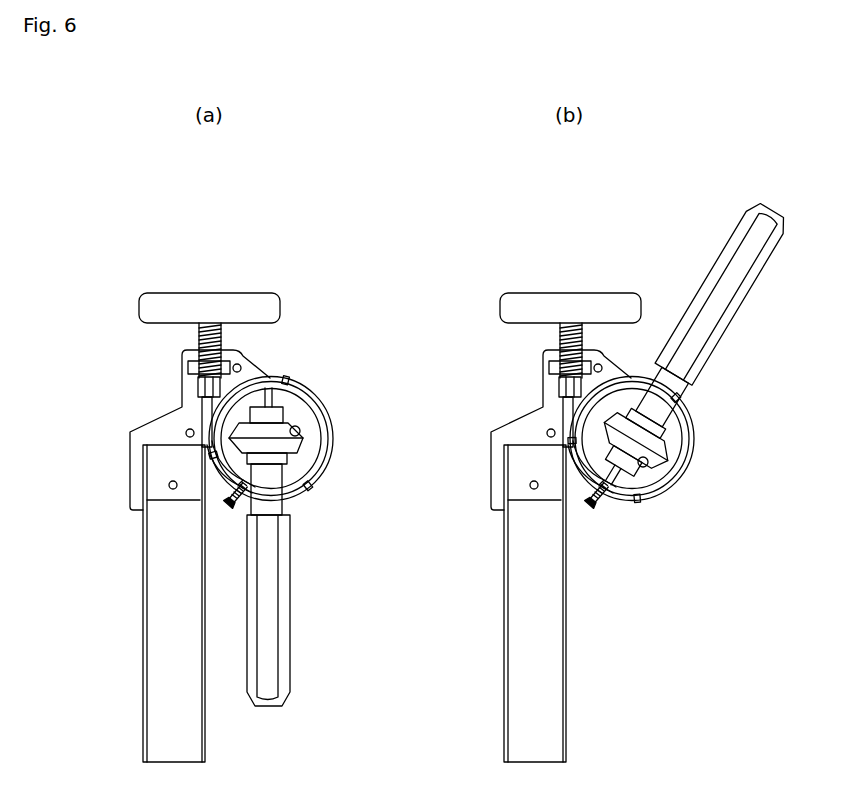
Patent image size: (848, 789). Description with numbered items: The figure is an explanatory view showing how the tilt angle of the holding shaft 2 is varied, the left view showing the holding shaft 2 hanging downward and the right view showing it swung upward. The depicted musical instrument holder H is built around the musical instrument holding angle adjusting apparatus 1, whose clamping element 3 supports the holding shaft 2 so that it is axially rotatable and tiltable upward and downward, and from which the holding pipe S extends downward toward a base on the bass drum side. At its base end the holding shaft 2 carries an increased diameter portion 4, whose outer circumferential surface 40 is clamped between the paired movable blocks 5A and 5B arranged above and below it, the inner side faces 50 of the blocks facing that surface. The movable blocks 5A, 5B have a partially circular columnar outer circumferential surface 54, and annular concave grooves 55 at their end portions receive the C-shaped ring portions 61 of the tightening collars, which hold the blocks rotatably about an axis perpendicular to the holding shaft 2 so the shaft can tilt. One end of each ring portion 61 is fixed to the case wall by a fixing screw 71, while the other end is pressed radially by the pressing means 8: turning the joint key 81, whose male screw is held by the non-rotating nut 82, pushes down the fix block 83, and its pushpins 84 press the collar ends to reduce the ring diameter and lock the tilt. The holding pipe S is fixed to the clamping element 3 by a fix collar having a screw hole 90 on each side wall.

In FIG. 6A, the musical instrument holding angle adjusting apparatus 1 is at (348, 267).
In FIG. 6B, the musical instrument holding angle adjusting apparatus 1 is at (675, 242).
In FIG. 6A, the holding shaft 2 is at (287, 605).
In FIG. 6B, the holding shaft 2 is at (733, 303).
In FIG. 6A, the clamping element 3 is at (153, 411).
In FIG. 6B, the clamping element 3 is at (514, 411).
In FIG. 6A, the increased diameter portion 4 is at (305, 437).
In FIG. 6B, the increased diameter portion 4 is at (662, 450).
In FIG. 6A, the movable block 5A is at (308, 470).
In FIG. 6B, the movable block 5A is at (622, 397).
In FIG. 6A, the movable block 5B is at (235, 470).
In FIG. 6B, the movable block 5B is at (694, 436).
In FIG. 6A, the pressing means 8 is at (168, 287).
In FIG. 6B, the pressing means 8 is at (529, 287).
In FIG. 6A, the outer circumferential surface 40 is at (303, 450).
In FIG. 6B, the outer circumferential surface 40 is at (640, 468).
In FIG. 6A, the inner side face 50 is at (293, 427).
In FIG. 6B, the inner side face 50 is at (637, 473).
In FIG. 6A, the outer circumferential surface 54 is at (215, 468).
In FIG. 6B, the outer circumferential surface 54 is at (592, 467).
In FIG. 6A, the annular concave groove 55 is at (308, 485).
In FIG. 6A, the ring portion 61 is at (287, 382).
In FIG. 6B, the ring portion 61 is at (690, 412).
In FIG. 6A, the fixing screw 71 is at (228, 508).
In FIG. 6B, the fixing screw 71 is at (590, 508).
In FIG. 6A, the joint key 81 is at (218, 298).
In FIG. 6B, the joint key 81 is at (579, 298).
In FIG. 6A, the nut 82 is at (192, 366).
In FIG. 6B, the nut 82 is at (553, 366).
In FIG. 6A, the fix block 83 is at (202, 388).
In FIG. 6B, the fix block 83 is at (563, 388).
In FIG. 6A, the pushpin 84 is at (207, 413).
In FIG. 6B, the pushpin 84 is at (568, 413).
In FIG. 6A, the screw hole 90 is at (157, 463).
In FIG. 6B, the screw hole 90 is at (518, 463).
In FIG. 6A, the musical instrument holder H is at (258, 205).
In FIG. 6B, the musical instrument holder H is at (618, 205).
In FIG. 6A, the holding pipe S is at (207, 736).
In FIG. 6B, the holding pipe S is at (568, 736).